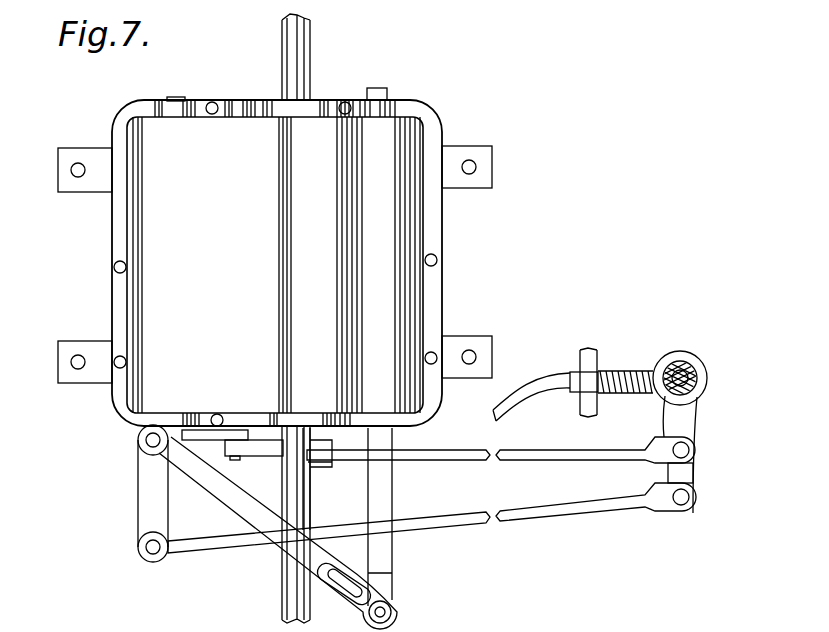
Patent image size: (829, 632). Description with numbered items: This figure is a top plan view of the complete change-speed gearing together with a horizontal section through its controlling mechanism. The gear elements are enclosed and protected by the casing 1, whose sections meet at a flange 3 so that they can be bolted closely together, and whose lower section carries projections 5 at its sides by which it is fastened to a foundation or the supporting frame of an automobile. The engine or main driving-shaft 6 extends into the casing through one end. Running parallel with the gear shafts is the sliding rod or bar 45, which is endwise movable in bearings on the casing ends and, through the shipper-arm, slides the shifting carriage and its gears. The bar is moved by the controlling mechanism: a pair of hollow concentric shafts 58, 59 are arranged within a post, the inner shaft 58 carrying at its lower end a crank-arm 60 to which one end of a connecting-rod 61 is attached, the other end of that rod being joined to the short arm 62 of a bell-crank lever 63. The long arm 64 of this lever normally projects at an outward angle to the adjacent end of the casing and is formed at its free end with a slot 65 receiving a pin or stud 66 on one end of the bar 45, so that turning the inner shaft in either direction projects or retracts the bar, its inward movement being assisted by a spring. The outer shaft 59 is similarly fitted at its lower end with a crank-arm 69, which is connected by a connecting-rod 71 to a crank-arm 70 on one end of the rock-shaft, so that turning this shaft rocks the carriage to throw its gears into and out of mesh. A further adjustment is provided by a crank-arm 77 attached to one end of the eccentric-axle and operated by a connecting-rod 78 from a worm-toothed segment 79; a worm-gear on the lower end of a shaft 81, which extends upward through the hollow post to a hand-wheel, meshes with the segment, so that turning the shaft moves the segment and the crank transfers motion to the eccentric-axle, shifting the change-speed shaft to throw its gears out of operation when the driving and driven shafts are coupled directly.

The casing 1 is at (276, 265).
The flange 3 is at (112, 233).
The projections 5 is at (78, 150).
The main driving-shaft 6 is at (282, 60).
The sliding rod or bar 45 is at (385, 497).
The inner hollow shaft 58 is at (704, 385).
The hollow shaft or sleeve 59 is at (683, 361).
The crank-arm 60 is at (692, 472).
The connecting-rod 61 is at (553, 512).
The short arm 62 is at (140, 512).
The bell-crank lever 63 is at (136, 437).
The long arm 64 is at (200, 481).
The slot 65 is at (348, 598).
The pin or stud 66 is at (391, 609).
The crank-arm 69 is at (690, 414).
The crank-arm 70 is at (324, 455).
The connecting-rod 71 is at (563, 457).
The crank-arm 77 is at (226, 440).
The connecting-rod 78 is at (542, 398).
The worm-toothed segment 79 is at (630, 368).
The shaft 81 is at (697, 376).